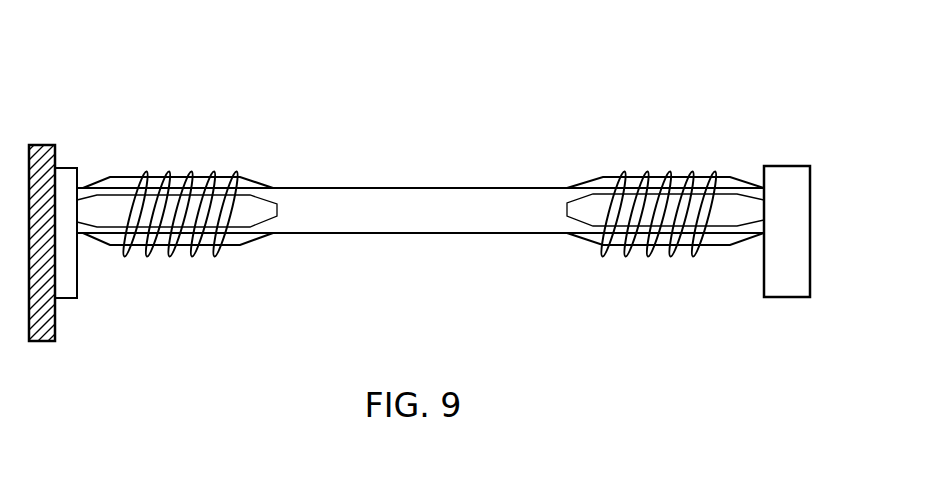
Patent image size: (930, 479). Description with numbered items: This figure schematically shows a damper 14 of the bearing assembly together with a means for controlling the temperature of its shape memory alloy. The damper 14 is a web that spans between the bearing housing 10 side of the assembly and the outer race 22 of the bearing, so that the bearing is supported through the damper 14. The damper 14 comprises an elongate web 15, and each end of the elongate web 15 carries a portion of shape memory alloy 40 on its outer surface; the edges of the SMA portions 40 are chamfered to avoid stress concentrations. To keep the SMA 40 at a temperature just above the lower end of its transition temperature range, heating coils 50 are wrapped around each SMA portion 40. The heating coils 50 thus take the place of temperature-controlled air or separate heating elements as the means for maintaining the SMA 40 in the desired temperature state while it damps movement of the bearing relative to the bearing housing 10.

The bearing housing 10 is at (40, 147).
The damper 14 is at (68, 178).
The elongate web 15 is at (399, 207).
The outer race 22 is at (790, 175).
The shape memory alloy portion 40 is at (255, 207).
The heating coil 50 is at (193, 177).